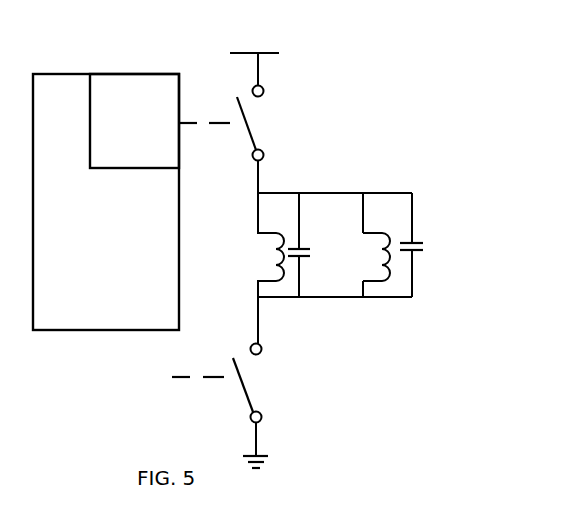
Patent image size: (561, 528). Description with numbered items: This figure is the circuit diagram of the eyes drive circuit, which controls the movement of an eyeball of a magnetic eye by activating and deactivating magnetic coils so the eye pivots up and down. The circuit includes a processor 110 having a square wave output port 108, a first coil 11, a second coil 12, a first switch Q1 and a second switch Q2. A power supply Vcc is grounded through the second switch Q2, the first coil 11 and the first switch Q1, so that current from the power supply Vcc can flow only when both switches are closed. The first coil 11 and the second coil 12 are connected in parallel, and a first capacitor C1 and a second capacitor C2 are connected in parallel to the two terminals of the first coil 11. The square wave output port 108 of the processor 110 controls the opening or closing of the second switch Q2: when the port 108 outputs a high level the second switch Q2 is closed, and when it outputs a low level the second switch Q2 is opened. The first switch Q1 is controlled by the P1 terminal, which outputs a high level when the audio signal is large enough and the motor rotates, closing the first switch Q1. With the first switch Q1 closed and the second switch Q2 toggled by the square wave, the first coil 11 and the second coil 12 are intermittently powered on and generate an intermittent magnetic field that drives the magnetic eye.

The square wave output port 108 is at (151, 136).
The processor 110 is at (123, 275).
The first coil 11 is at (255, 257).
The second coil 12 is at (382, 245).
The first capacitor C1 is at (310, 245).
The second capacitor C2 is at (426, 245).
The first switch Q1 is at (230, 406).
The second switch Q2 is at (221, 117).
The P1 terminal P1 is at (175, 385).
The power supply Vcc is at (254, 55).